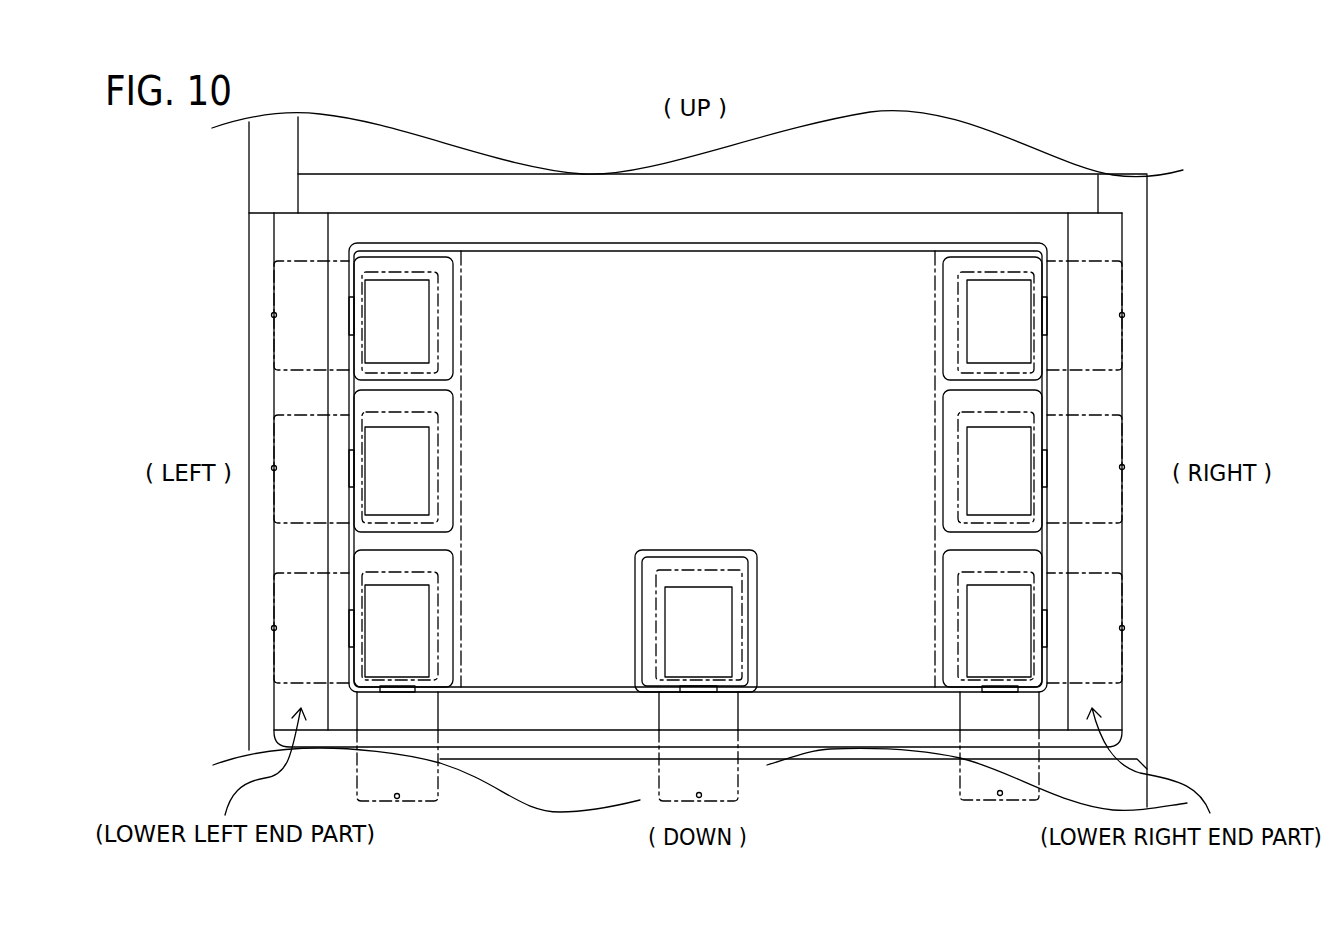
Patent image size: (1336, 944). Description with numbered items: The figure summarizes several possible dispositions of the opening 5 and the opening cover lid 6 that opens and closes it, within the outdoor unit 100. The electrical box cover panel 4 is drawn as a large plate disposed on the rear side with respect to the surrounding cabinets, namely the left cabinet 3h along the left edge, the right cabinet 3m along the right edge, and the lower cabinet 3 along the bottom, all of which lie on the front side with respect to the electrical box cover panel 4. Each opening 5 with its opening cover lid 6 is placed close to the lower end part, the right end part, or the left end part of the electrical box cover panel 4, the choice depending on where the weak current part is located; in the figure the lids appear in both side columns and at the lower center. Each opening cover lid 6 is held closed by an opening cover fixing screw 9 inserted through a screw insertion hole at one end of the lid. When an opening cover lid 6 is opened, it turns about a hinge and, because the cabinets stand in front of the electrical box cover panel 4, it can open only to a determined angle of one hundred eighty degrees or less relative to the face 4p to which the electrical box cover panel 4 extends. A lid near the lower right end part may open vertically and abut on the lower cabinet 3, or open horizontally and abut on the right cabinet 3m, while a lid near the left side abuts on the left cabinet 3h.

The outdoor unit 100 is at (1203, 211).
The lower cabinet 3 is at (537, 788).
The left cabinet 3h is at (300, 548).
The right cabinet 3m is at (1088, 542).
The electrical box cover panel 4 is at (742, 277).
The face 4p is at (948, 273).
The opening 5 is at (1005, 280).
The opening cover lid 6 is at (1087, 288).
The opening cover fixing screw 9 is at (1124, 314).